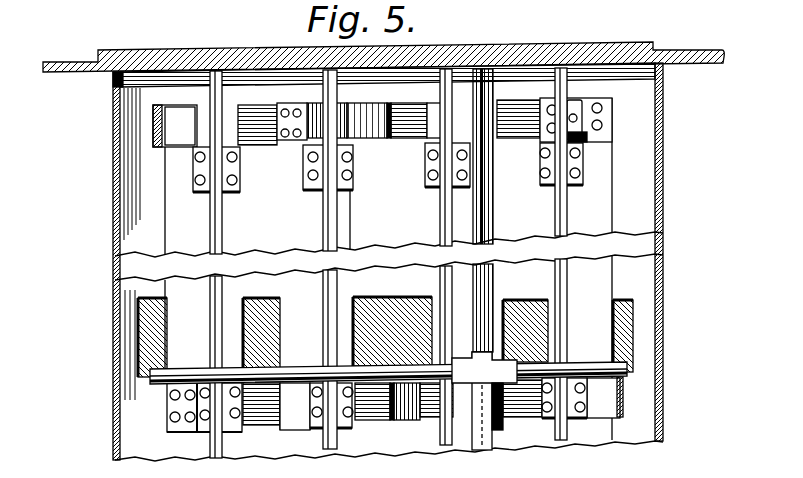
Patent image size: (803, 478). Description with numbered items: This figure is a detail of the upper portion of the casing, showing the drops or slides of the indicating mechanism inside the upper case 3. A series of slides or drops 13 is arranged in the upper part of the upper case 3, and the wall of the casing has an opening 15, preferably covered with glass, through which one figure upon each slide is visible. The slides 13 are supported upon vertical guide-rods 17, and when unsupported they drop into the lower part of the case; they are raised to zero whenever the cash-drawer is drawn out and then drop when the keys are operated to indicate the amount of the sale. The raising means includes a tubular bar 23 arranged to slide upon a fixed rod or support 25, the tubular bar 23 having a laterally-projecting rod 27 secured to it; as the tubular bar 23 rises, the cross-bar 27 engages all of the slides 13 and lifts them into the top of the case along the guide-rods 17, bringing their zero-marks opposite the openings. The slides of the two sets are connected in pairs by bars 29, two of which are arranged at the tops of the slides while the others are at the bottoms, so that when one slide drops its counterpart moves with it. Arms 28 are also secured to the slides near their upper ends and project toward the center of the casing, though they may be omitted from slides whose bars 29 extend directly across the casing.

The upper case 3 is at (113, 118).
The slides or drops 13 is at (503, 206).
The opening 15 is at (385, 337).
The vertical guide-rods 17 is at (214, 226).
The tubular bar 23 is at (493, 369).
The fixed rod or support 25 is at (489, 289).
The laterally-projecting rod 27 is at (357, 373).
The arms 28 is at (187, 147).
The bars 29 is at (157, 147).